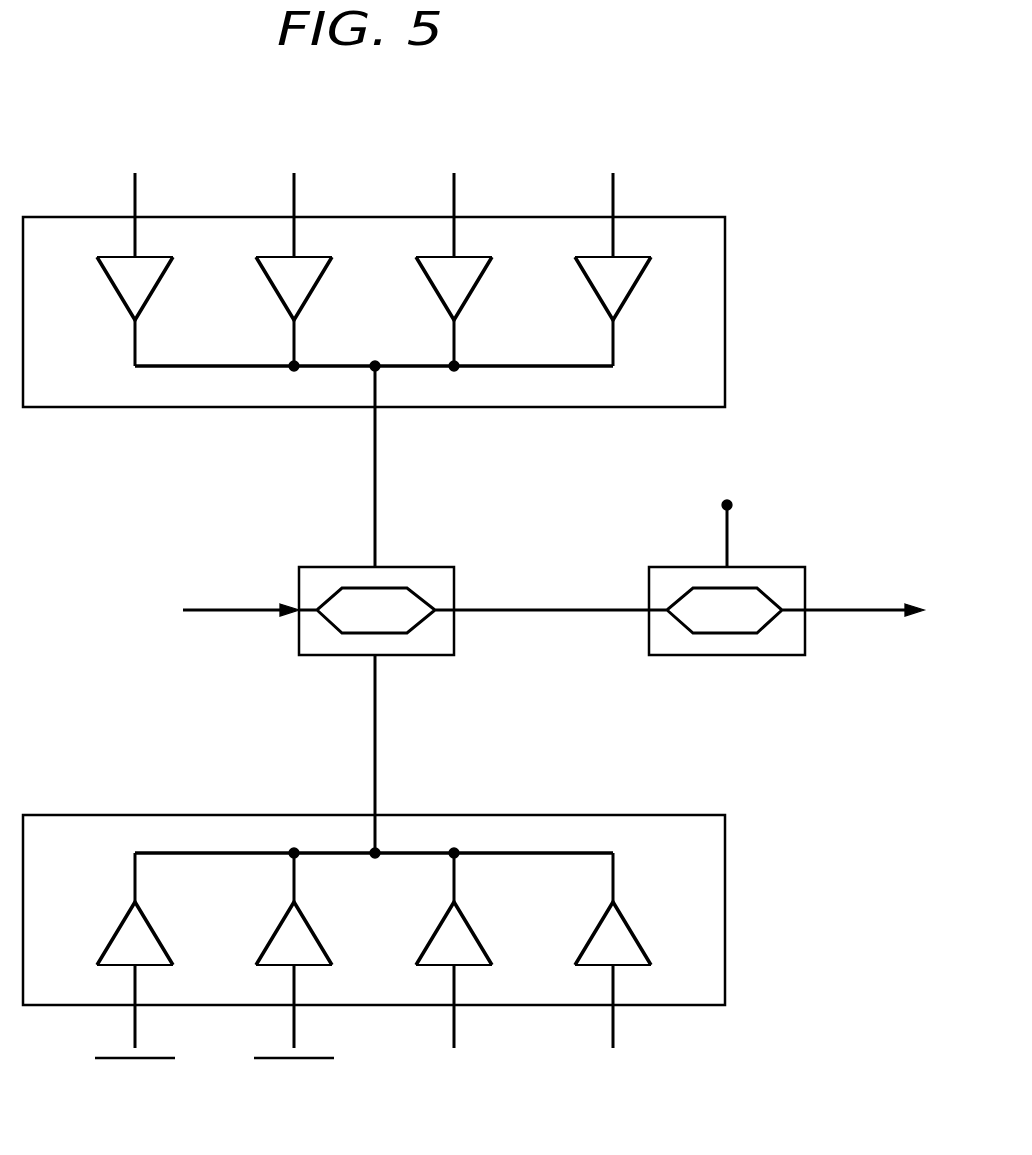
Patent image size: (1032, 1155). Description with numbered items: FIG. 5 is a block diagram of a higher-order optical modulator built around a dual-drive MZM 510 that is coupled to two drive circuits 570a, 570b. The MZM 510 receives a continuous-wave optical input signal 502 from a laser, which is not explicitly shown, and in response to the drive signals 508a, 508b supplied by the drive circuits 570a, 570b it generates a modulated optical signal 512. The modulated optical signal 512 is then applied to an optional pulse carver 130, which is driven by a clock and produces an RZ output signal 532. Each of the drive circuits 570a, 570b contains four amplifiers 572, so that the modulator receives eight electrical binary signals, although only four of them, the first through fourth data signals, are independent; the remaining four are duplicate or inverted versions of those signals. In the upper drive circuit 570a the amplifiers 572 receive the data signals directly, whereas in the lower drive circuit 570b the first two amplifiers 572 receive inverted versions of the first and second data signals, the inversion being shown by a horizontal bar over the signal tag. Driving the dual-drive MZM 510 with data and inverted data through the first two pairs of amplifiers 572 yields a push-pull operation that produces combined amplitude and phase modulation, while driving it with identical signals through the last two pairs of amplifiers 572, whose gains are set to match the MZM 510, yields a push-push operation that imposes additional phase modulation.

The pulse carver 130 is at (763, 567).
The optical input signal 502 is at (237, 613).
The drive signal 508a is at (375, 483).
The drive signal 508b is at (375, 750).
The dual-drive MZM 510 is at (398, 567).
The modulated optical signal 512 is at (550, 613).
The RZ output signal 532 is at (860, 613).
The drive circuit 570a is at (673, 217).
The drive circuit 570b is at (635, 815).
The amplifiers 572 is at (153, 290).